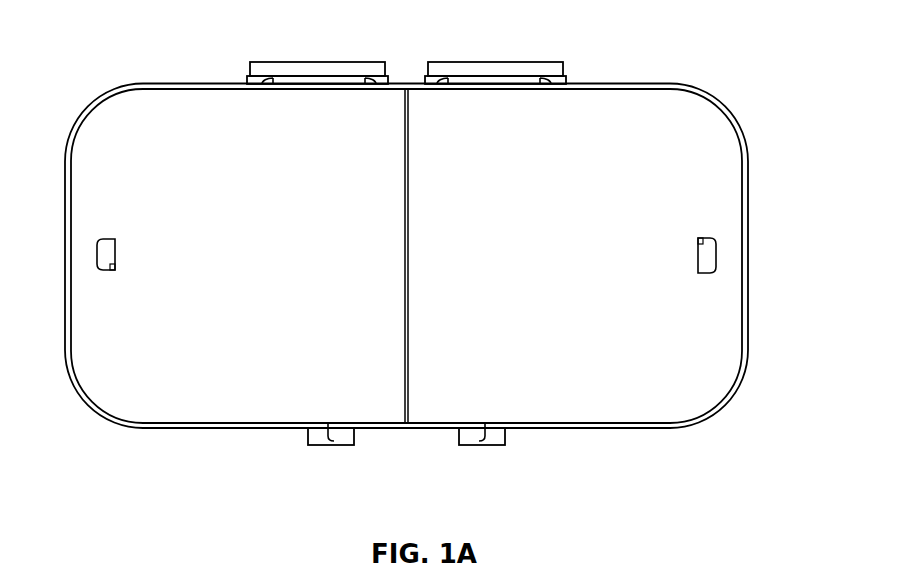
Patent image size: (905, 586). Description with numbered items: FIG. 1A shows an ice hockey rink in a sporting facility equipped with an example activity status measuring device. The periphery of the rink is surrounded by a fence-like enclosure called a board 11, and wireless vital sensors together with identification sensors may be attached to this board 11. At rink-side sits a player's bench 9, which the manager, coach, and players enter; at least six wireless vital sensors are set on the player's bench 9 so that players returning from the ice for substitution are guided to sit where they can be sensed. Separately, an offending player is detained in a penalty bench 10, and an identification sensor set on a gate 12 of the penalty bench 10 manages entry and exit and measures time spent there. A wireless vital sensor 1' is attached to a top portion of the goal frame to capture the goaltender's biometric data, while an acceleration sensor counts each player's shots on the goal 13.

The wireless vital sensor 1' is at (420, 256).
The player's bench 9 is at (325, 62).
The penalty bench 10 is at (331, 447).
The board 11 is at (745, 177).
The gate 12 is at (327, 436).
The goal 13 is at (102, 240).